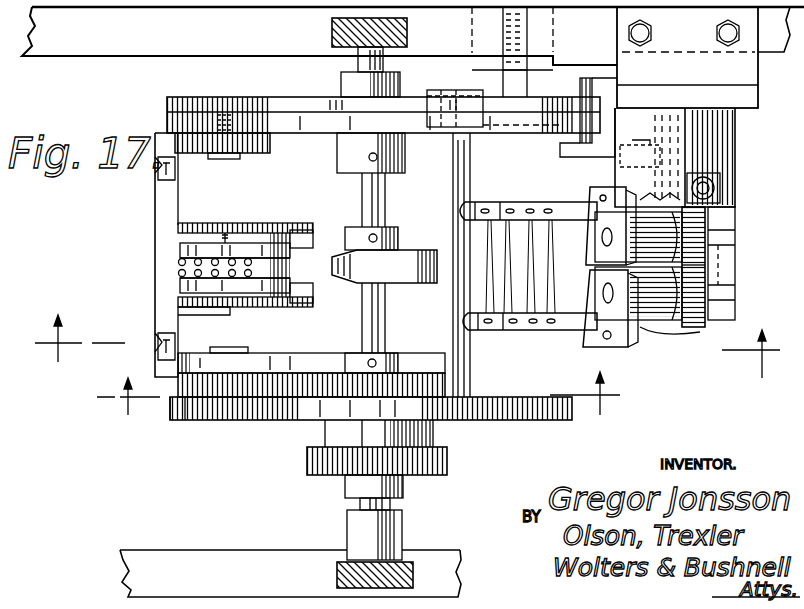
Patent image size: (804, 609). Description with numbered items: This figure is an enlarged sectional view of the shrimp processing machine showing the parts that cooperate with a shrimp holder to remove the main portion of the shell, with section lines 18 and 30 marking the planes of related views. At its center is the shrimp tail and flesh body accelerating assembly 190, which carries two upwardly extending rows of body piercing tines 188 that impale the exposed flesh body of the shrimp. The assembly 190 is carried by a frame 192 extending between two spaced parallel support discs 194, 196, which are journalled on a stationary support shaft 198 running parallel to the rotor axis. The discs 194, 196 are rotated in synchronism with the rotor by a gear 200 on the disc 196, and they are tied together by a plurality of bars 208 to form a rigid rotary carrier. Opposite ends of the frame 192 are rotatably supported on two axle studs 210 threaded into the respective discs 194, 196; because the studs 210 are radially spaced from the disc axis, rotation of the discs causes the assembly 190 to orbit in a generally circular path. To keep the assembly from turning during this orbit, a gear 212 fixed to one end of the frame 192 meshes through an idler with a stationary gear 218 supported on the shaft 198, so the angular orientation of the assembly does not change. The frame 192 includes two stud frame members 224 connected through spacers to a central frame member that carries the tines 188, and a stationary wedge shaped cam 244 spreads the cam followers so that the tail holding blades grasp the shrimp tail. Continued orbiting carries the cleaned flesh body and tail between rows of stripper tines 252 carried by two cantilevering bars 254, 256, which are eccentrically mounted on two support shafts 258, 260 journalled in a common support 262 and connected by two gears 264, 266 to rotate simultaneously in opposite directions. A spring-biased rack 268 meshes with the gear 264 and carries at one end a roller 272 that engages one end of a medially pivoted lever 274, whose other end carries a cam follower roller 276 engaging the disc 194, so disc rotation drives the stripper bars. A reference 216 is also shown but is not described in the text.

The section line 18- 18 is at (18, 370).
The section line 30- 30 is at (363, 398).
The body piercing tines 188 is at (180, 272).
The shrimp tail and flesh body accelerating assembly 190 is at (249, 214).
The frame 192 is at (163, 221).
The support disc 194 is at (318, 97).
The support disc 196 is at (256, 421).
The stationary support shaft 198 is at (398, 313).
The gear 200 is at (320, 472).
The bars 208 is at (366, 152).
The axle studs 210 is at (221, 162).
The gear 212 is at (174, 402).
The gear bar 216 is at (300, 375).
The stationary gear 218 is at (428, 370).
The stud frame members 224 is at (192, 230).
The wedge shaped cam 244 is at (424, 239).
The stripper tines 252 is at (537, 196).
The cantilevering bar 254 is at (561, 203).
The cantilevering bar 256 is at (566, 328).
The support shaft 258 is at (607, 238).
The support shaft 260 is at (606, 295).
The common support 262 is at (720, 270).
The gear 264 is at (708, 221).
The gear 266 is at (700, 332).
The rack 268 is at (690, 166).
The roller 272 is at (653, 150).
The medially pivoted lever 274 is at (566, 84).
The cam follower roller 276 is at (430, 92).